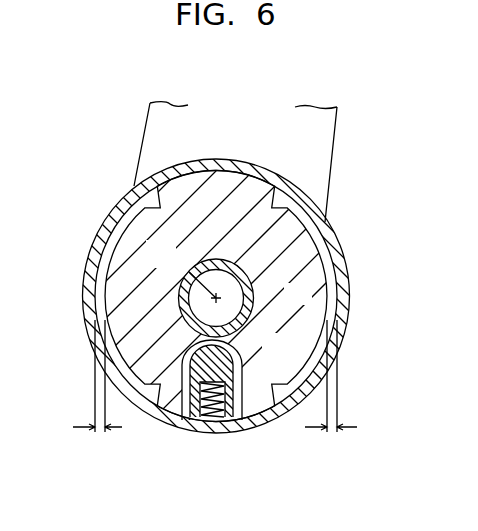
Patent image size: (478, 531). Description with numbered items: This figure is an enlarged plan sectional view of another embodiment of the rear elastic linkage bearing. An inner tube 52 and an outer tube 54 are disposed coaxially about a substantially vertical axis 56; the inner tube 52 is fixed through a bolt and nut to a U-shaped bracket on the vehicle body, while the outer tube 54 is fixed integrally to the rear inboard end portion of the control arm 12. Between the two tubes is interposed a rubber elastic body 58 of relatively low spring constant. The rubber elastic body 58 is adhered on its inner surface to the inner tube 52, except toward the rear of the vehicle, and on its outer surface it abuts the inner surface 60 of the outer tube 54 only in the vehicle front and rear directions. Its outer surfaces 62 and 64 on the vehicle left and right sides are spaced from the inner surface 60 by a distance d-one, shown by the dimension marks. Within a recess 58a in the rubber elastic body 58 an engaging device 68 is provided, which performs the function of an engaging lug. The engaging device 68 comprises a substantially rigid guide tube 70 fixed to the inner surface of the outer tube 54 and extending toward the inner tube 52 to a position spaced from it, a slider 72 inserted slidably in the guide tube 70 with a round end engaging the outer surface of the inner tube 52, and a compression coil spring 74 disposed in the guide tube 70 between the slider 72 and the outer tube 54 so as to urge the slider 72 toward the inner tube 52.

The control arm 12 is at (330, 128).
The inner tube 52 is at (250, 293).
The outer tube 54 is at (153, 175).
The axis 56 is at (196, 273).
The rubber elastic body 58 is at (313, 256).
The recess 58a is at (182, 352).
The inner surface 60 is at (332, 298).
The outer surface 62 is at (112, 218).
The outer surface 64 is at (325, 224).
The engaging device 68 is at (247, 374).
The guide tube 70 is at (163, 421).
The slider 72 is at (222, 352).
The compression coil spring 74 is at (221, 438).